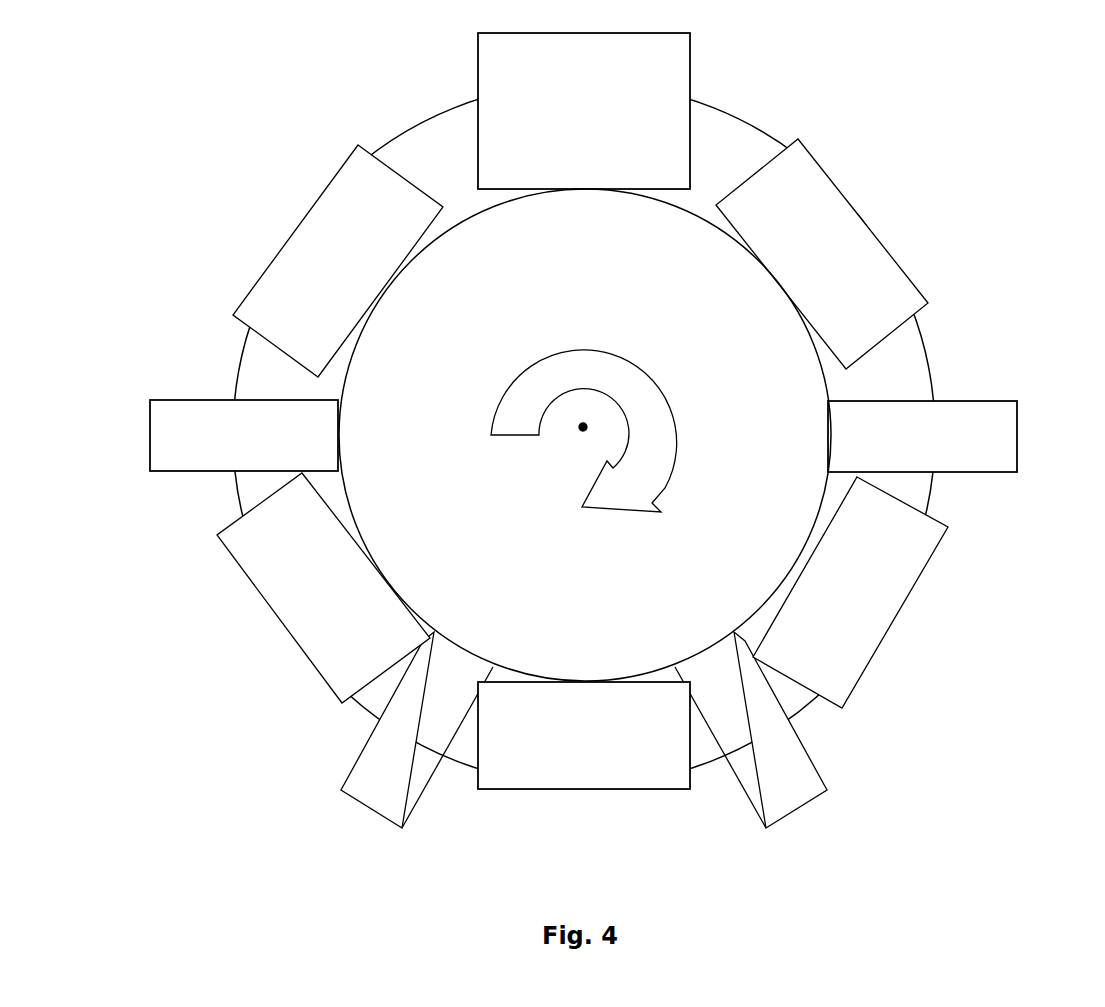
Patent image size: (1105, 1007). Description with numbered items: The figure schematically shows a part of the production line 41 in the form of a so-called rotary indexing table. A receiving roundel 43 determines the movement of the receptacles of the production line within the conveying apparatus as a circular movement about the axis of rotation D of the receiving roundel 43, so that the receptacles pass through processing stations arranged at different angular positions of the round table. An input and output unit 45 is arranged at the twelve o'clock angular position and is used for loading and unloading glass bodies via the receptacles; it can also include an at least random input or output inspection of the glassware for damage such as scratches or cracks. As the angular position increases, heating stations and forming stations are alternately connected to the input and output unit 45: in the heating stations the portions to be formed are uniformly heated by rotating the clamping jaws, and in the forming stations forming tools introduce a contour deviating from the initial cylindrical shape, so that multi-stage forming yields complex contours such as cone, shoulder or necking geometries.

The production line 41 is at (898, 153).
The receiving roundel 43 is at (420, 127).
The input and output unit 45 is at (672, 73).
The axis of rotation D is at (580, 432).